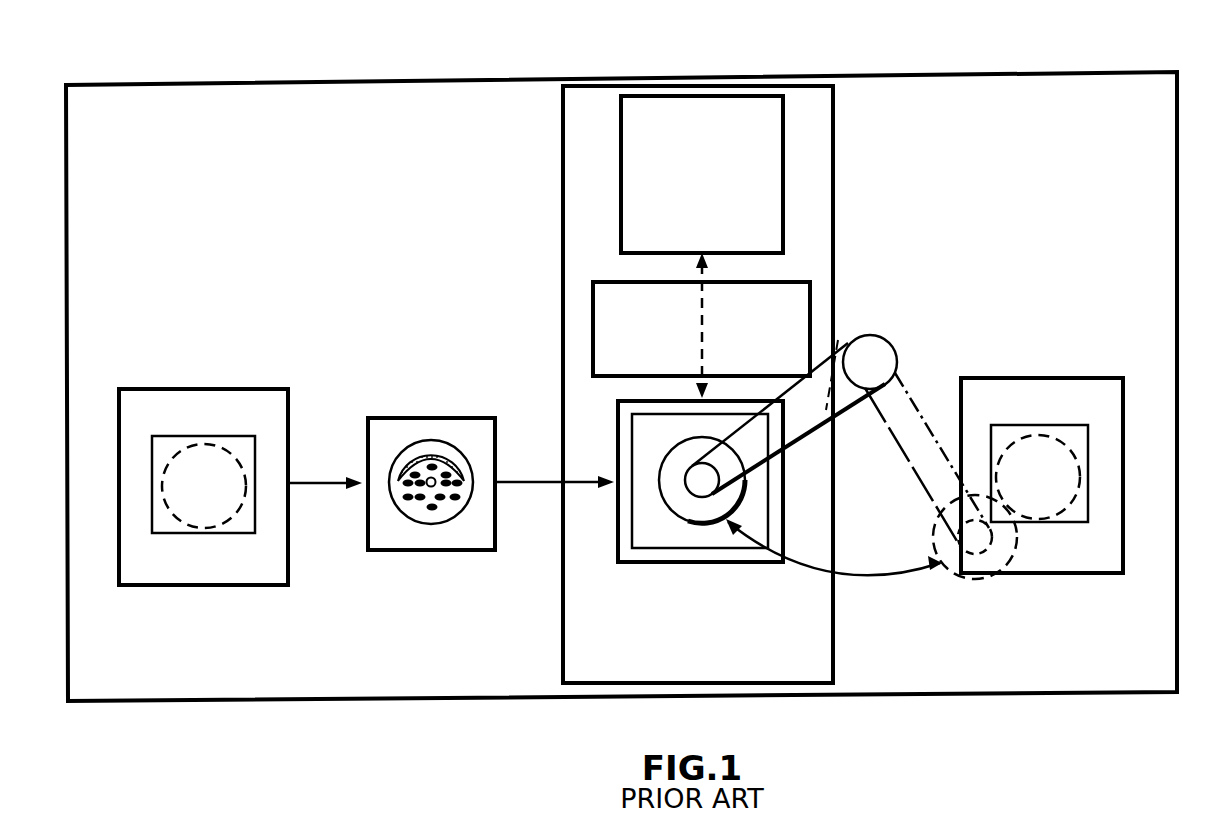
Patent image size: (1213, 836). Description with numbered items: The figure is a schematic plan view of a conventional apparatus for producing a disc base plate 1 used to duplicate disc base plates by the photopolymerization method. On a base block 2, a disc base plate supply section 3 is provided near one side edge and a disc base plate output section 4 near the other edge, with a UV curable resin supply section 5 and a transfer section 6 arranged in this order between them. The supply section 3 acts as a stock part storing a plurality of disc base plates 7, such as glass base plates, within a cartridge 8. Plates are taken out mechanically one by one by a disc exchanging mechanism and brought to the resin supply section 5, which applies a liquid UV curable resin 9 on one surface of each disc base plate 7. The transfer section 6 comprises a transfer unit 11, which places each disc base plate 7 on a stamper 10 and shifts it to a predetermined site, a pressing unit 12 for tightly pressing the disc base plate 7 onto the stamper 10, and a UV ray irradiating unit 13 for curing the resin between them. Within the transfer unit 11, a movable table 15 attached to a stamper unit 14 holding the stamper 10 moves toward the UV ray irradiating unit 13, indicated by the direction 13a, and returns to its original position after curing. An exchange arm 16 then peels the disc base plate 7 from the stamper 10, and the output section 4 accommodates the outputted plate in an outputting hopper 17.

The apparatus for producing a disc base plate 1 is at (802, 46).
The base block 2 is at (397, 646).
The disc base plate supply section 3 is at (234, 389).
The disc base plate output section 4 is at (1018, 388).
The UV curable resin supply section 5 is at (432, 418).
The transfer section 6 is at (833, 128).
The disc base plate 7 is at (190, 447).
The cartridge 8 is at (189, 533).
The liquid UV curable resin 9 is at (410, 453).
The stamper 10 is at (677, 497).
The transfer unit 11 is at (753, 503).
The pressing unit 12 is at (605, 298).
The UV ray irradiating unit 13 is at (783, 172).
The rotation direction 13a is at (705, 483).
The stamper unit 14 is at (700, 541).
The movable table 15 is at (650, 556).
The exchange arm 16 is at (835, 338).
The outputting hopper 17 is at (1073, 425).